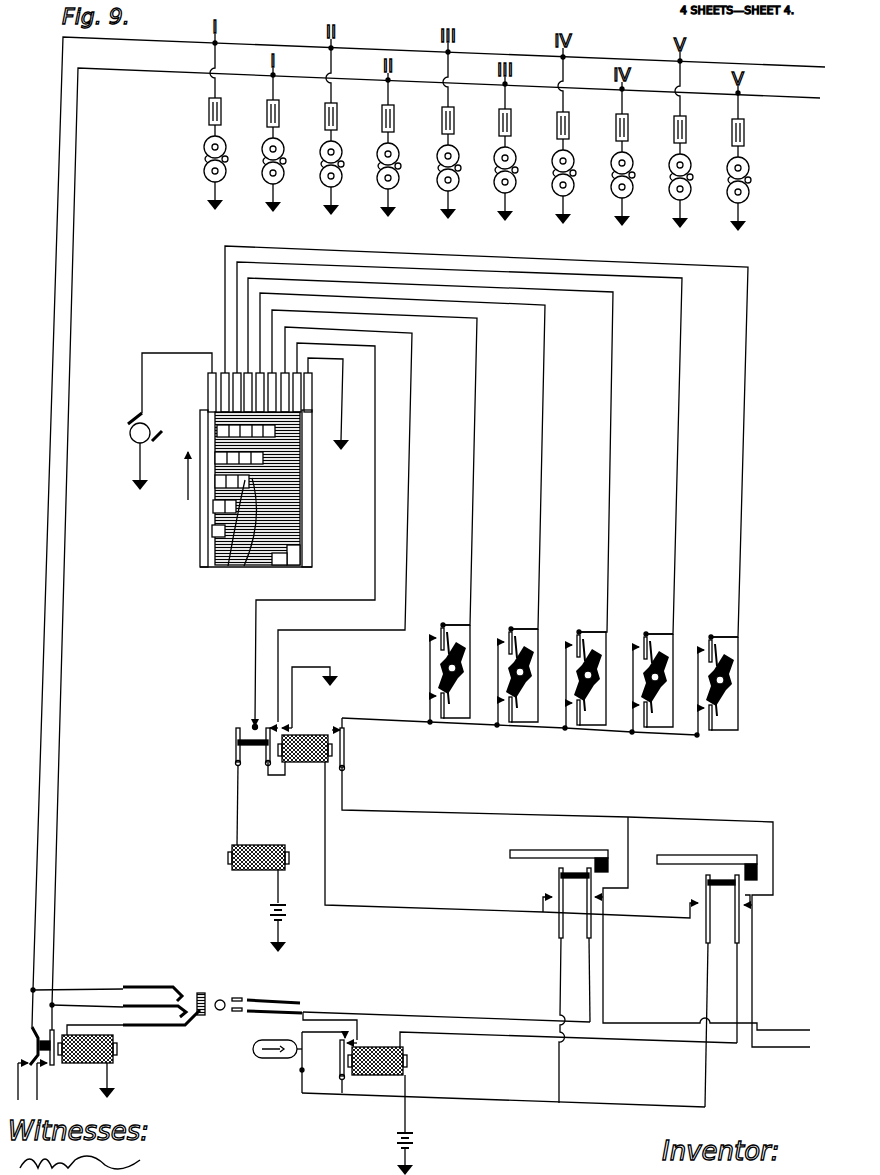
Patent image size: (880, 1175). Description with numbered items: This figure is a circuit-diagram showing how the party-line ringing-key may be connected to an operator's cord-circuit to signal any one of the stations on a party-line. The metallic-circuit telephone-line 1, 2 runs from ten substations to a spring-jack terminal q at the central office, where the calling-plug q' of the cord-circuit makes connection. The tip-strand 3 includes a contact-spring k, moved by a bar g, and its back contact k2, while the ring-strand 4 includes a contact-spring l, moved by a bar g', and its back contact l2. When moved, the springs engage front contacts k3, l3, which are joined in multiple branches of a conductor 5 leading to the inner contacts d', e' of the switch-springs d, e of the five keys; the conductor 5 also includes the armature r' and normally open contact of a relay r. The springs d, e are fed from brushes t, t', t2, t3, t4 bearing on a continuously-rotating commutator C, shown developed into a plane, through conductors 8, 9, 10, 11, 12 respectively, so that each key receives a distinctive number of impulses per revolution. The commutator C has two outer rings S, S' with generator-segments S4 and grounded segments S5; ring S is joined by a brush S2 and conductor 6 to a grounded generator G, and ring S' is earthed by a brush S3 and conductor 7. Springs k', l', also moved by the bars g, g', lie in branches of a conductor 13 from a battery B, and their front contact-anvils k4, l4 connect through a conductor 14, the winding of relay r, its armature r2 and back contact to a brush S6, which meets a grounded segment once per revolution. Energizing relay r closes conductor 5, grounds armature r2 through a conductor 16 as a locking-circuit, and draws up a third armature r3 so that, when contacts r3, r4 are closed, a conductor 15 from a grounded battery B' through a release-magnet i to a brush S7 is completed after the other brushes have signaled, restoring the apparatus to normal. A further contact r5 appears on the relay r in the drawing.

The metallic-circuit telephone-line conductor 1 is at (44, 592).
The metallic-circuit telephone-line conductor 2 is at (90, 596).
The tip-strand 3 is at (427, 1016).
The ring-strand 4 is at (465, 1034).
The conductor 5 is at (496, 817).
The conductor 6 is at (182, 353).
The conductor 7 is at (350, 400).
The conductor 8 is at (374, 467).
The conductor 9 is at (402, 461).
The conductor 10 is at (430, 455).
The conductor 11 is at (459, 448).
The conductor 12 is at (486, 441).
The conductor 13 is at (530, 1100).
The conductor 14 is at (326, 866).
The conductor 15 is at (237, 810).
The conductor 16 is at (318, 667).
The generator G is at (130, 433).
The outer ring S is at (247, 489).
The outer ring S' is at (316, 488).
The brush S2 is at (200, 393).
The brush S3 is at (330, 416).
The commutator-segments S4 is at (240, 567).
The commutator-segments S5 is at (285, 562).
The brush S6 is at (290, 392).
The brush S7 is at (300, 407).
The commutator C is at (205, 553).
The brush t is at (290, 379).
The brush t' is at (261, 380).
The brush t2 is at (249, 372).
The brush t3 is at (237, 372).
The brush t4 is at (225, 372).
The relay r is at (300, 762).
The armature r' is at (347, 744).
The armature r2 is at (265, 764).
The armature r3 is at (233, 746).
The contact r4 is at (250, 724).
The relay contact r5 is at (292, 724).
The release-magnet i is at (248, 872).
The battery B is at (419, 1154).
The battery B' is at (261, 928).
The spring-jack terminal q is at (136, 999).
The calling-plug q' is at (258, 986).
The bar g is at (559, 848).
The bar g' is at (707, 854).
The contact-spring k is at (576, 945).
The spring k' is at (550, 985).
The back contact k2 is at (612, 898).
The front contact k3 is at (555, 897).
The front contact-anvil k4 is at (548, 896).
The contact-spring l is at (723, 959).
The spring l' is at (694, 991).
The back contact l2 is at (754, 906).
The front contact l3 is at (742, 896).
The front contact-anvil l4 is at (695, 900).
The commutator c is at (445, 662).
The switch-spring d is at (547, 708).
The inner contact d' is at (548, 688).
The switch-spring e is at (595, 628).
The inner contact e' is at (554, 654).